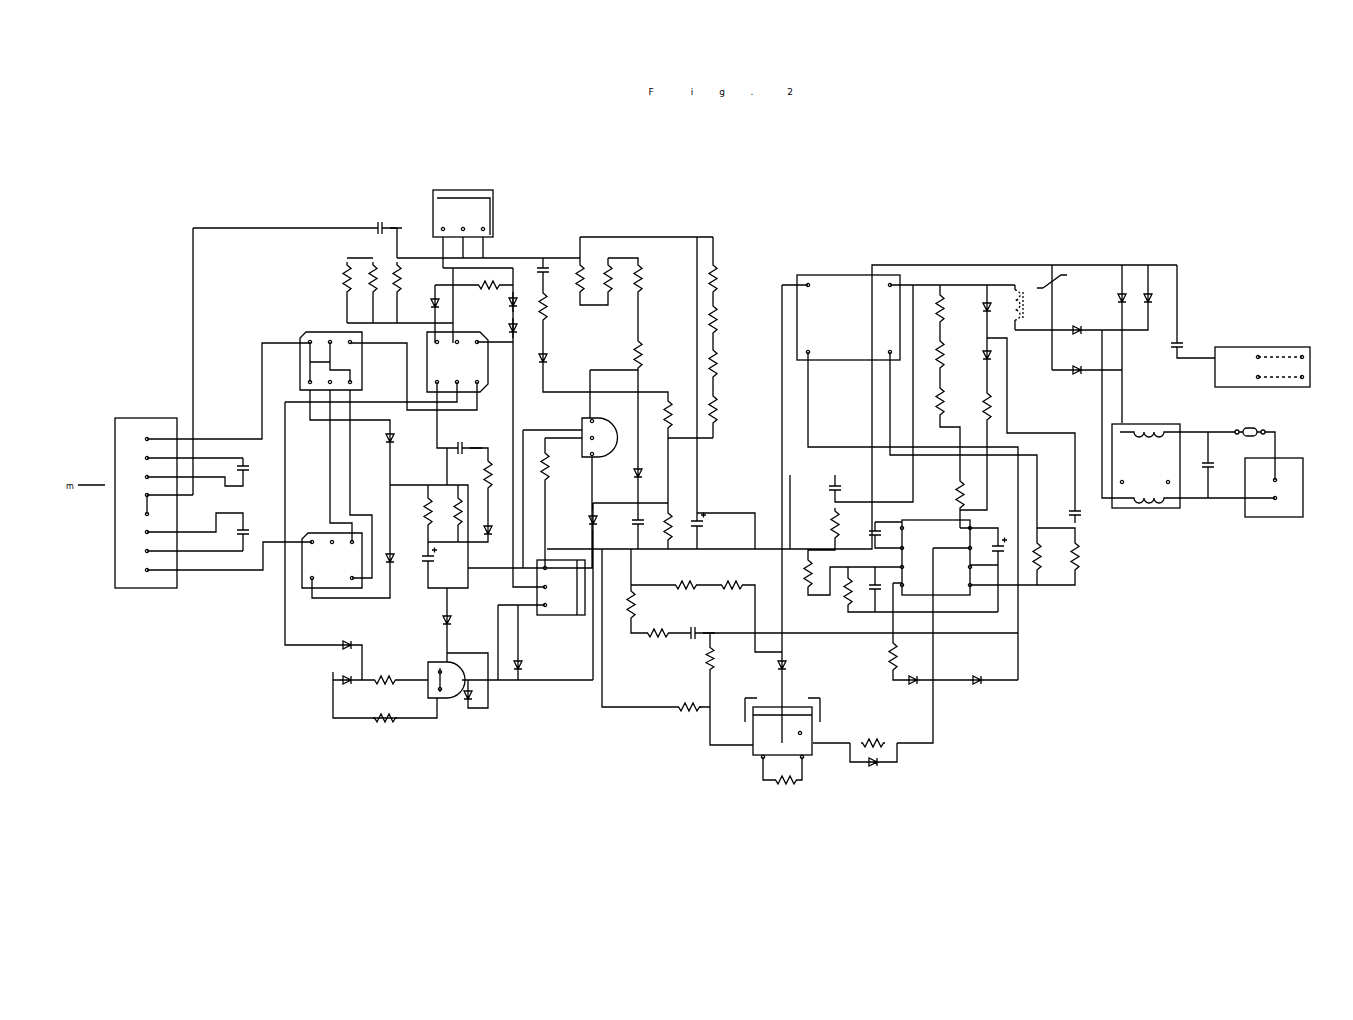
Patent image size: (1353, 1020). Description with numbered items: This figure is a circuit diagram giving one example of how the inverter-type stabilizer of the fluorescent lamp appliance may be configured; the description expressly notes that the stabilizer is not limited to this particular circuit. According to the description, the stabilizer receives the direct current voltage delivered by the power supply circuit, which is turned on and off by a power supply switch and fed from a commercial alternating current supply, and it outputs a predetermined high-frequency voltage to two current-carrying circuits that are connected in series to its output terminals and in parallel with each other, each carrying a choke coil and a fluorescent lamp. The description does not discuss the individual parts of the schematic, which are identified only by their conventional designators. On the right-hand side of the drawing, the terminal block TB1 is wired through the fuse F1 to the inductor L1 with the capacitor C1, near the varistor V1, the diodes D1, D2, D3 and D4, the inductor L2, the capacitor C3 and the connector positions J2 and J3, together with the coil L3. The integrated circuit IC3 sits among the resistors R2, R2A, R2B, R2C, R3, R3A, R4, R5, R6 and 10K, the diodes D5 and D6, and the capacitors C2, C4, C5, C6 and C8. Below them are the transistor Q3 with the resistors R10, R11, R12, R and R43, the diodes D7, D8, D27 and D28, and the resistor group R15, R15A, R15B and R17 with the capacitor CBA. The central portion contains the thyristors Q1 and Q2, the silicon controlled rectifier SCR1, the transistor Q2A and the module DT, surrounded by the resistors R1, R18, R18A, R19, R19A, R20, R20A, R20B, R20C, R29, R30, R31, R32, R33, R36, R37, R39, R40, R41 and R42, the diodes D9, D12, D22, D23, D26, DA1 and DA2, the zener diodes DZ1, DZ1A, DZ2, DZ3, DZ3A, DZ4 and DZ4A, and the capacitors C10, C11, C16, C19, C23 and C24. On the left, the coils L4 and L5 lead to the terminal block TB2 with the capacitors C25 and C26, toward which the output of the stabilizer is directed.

The terminal block TB2 is at (146, 493).
The capacitor C25 is at (255, 468).
The capacitor C26 is at (255, 524).
The capacitor C16 is at (386, 222).
The resistor R40 is at (342, 278).
The resistor R41 is at (368, 278).
The resistor R42 is at (403, 278).
The zener diode DZ1A is at (429, 303).
The resistor R18 is at (489, 291).
The zener diode DZ1 is at (519, 302).
The zener diode DZ2 is at (519, 328).
The thyristor Q1 is at (463, 202).
The capacitor C23 is at (549, 270).
The resistor R18A is at (550, 306).
The diode D9 is at (550, 358).
The resistor R29 is at (587, 278).
The resistor R36 is at (630, 316).
The resistor R37 is at (645, 278).
The resistor R20 is at (723, 278).
The resistor R20A is at (723, 319).
The resistor R20B is at (723, 363).
The resistor R20C is at (723, 409).
The resistor R39 is at (675, 414).
The silicon controlled rectifier SCR1 is at (607, 437).
The resistor R33 is at (552, 466).
The diode D12 is at (645, 473).
The diode DA1 is at (600, 520).
The capacitor C11 is at (644, 522).
The resistor R1 is at (675, 526).
The electrolytic capacitor C10 is at (707, 524).
The resistor R32 is at (496, 474).
The diode DA2 is at (496, 530).
The capacitor C24 is at (466, 442).
The resistor R30 is at (422, 511).
The resistor R31 is at (452, 511).
The electrolytic capacitor C19 is at (440, 565).
The diode D23 is at (397, 438).
The diode D22 is at (397, 558).
The relay L4 is at (318, 361).
The relay L5 is at (332, 560).
The diode/transistor module DT is at (457, 362).
The zener diode DZ4 is at (453, 620).
The zener diode DZ4A is at (348, 639).
The zener diode DZ3A is at (348, 686).
The resistor R19 is at (385, 686).
The resistor R19A is at (385, 724).
The transistor Q2A is at (424, 680).
The zener diode DZ3 is at (460, 698).
The diode D26 is at (519, 678).
The thyristor Q2 is at (561, 600).
The resistor R15B is at (625, 604).
The resistor R15A is at (686, 591).
The resistor R15 is at (732, 591).
The resistor R17 is at (658, 627).
The capacitor CBA is at (699, 628).
The resistor R11 is at (704, 658).
The resistor R12 is at (689, 713).
The diode D8 is at (789, 665).
The transistor Q3 is at (798, 728).
The resistor R10 is at (786, 787).
The resistor R is at (873, 736).
The diode D7 is at (873, 769).
The resistor R43 is at (900, 656).
The diode D28 is at (913, 687).
The diode D27 is at (977, 687).
The integrated circuit IC3 is at (935, 546).
The resistor R3 is at (828, 524).
The capacitor C2 is at (843, 488).
The resistor R3A is at (801, 573).
The capacitor C8 is at (869, 533).
The capacitor C5 is at (869, 587).
The resistor 10K is at (841, 591).
The electrolytic capacitor C6 is at (993, 549).
The resistor R6 is at (1044, 556).
The resistor R5 is at (1082, 556).
The capacitor C4 is at (1081, 513).
The resistor R2 is at (931, 308).
The resistor R2A is at (931, 354).
The resistor R2B is at (931, 401).
The resistor R2C is at (967, 494).
The diode D6 is at (980, 307).
The diode D5 is at (980, 355).
The resistor R4 is at (980, 406).
The relay L3 is at (848, 317).
The inductor L2 is at (1028, 305).
The varistor V1 is at (1061, 281).
The diode D3 is at (1077, 324).
The diode D2 is at (1077, 364).
The diode D4 is at (1114, 298).
The diode D1 is at (1156, 298).
The capacitor C3 is at (1186, 345).
The jumper J2 is at (1271, 367).
The jumper J3 is at (1291, 380).
The line filter inductor L1 is at (1146, 466).
The fuse F1 is at (1250, 424).
The capacitor C1 is at (1216, 468).
The terminal block TB1 is at (1285, 475).